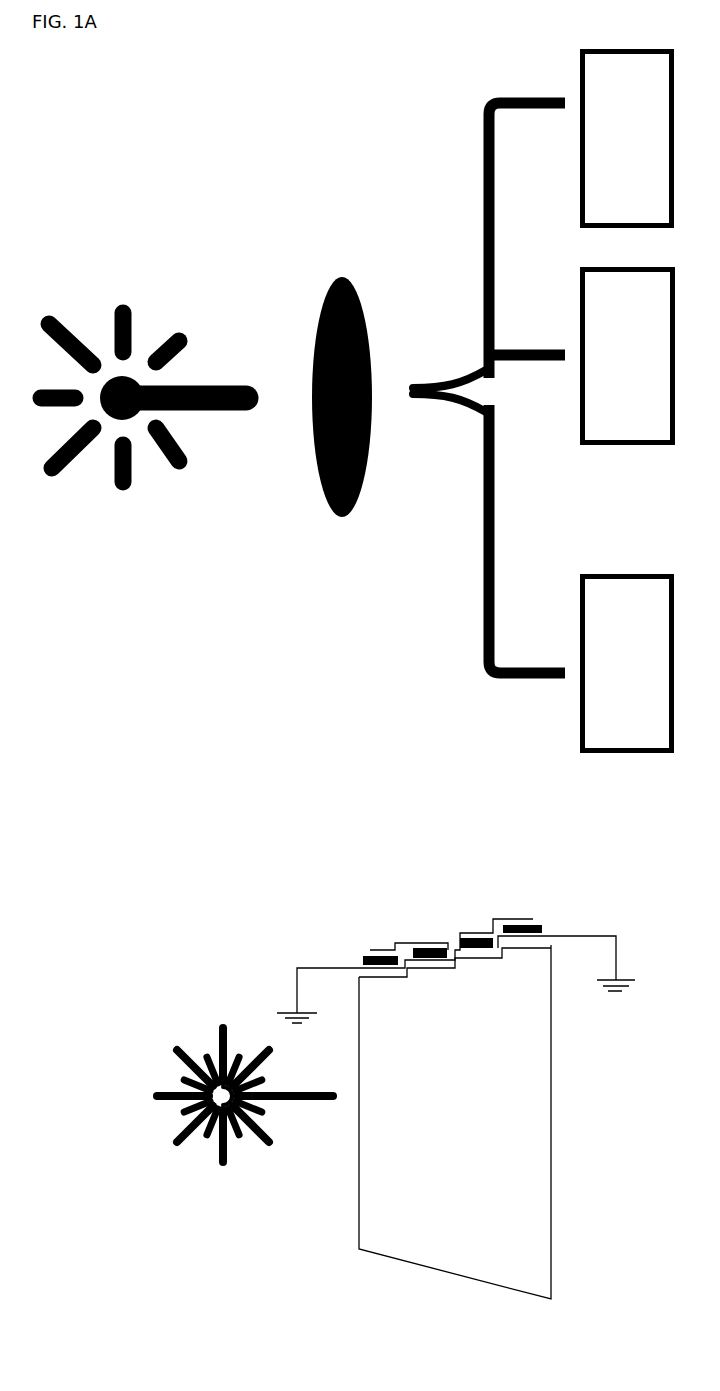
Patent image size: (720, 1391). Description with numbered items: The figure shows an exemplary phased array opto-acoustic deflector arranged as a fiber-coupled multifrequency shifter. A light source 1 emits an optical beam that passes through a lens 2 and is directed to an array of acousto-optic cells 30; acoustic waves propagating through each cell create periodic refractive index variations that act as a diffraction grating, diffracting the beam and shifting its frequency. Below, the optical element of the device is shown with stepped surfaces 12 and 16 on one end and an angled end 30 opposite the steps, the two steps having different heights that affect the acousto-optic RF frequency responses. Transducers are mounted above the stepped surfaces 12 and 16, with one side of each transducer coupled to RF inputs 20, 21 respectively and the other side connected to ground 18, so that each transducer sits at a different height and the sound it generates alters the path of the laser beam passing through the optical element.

The light source 1 is at (143, 452).
The lens 2 is at (342, 438).
The acousto-optic cells 30 is at (516, 688).
The stepped surface 12 is at (455, 987).
The stepped surface 16 is at (445, 961).
The ground 18 is at (579, 958).
The RF input 20 is at (370, 950).
The RF input 21 is at (533, 919).